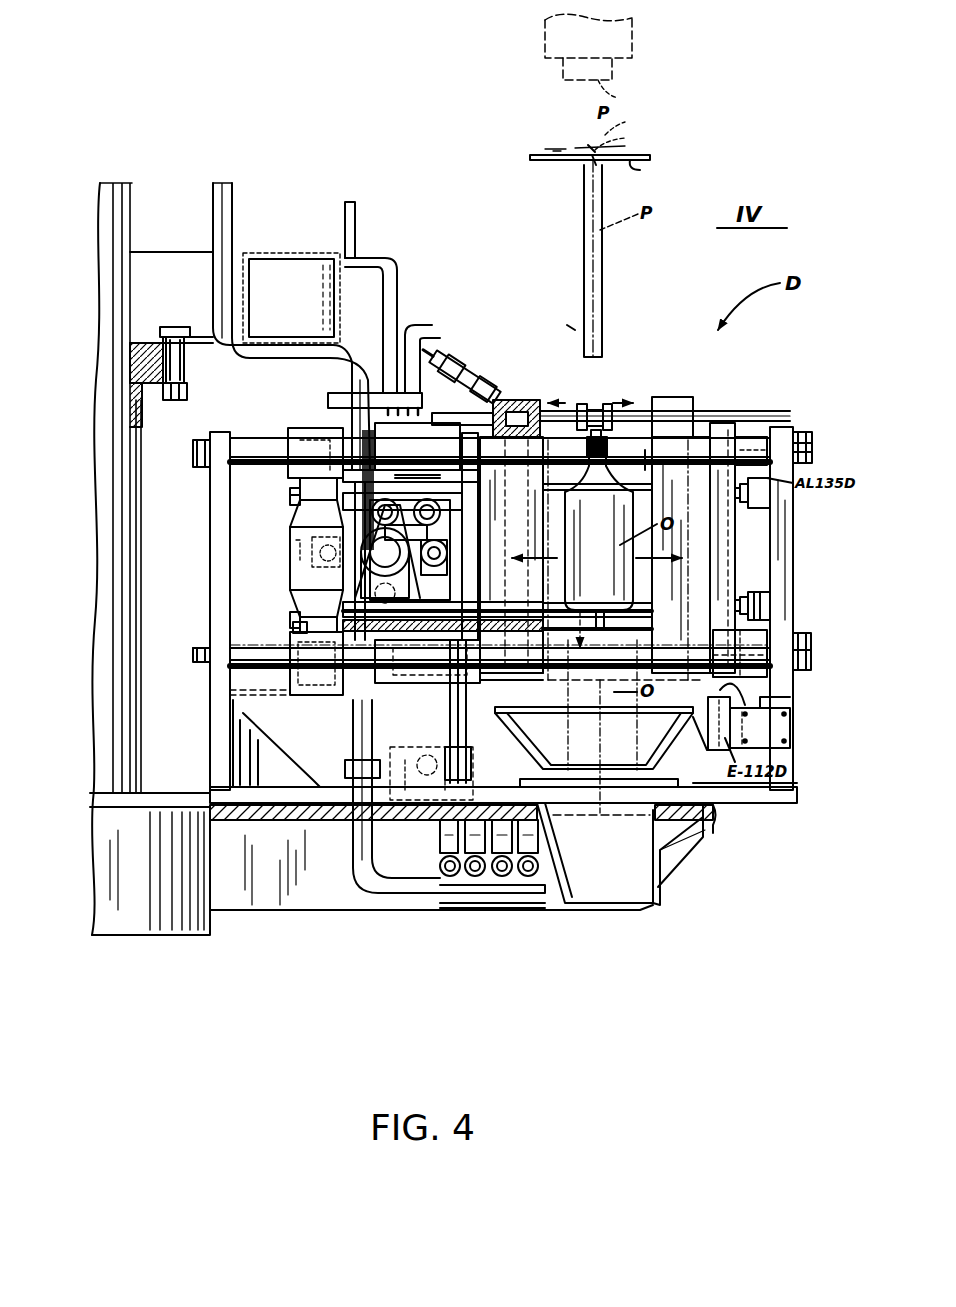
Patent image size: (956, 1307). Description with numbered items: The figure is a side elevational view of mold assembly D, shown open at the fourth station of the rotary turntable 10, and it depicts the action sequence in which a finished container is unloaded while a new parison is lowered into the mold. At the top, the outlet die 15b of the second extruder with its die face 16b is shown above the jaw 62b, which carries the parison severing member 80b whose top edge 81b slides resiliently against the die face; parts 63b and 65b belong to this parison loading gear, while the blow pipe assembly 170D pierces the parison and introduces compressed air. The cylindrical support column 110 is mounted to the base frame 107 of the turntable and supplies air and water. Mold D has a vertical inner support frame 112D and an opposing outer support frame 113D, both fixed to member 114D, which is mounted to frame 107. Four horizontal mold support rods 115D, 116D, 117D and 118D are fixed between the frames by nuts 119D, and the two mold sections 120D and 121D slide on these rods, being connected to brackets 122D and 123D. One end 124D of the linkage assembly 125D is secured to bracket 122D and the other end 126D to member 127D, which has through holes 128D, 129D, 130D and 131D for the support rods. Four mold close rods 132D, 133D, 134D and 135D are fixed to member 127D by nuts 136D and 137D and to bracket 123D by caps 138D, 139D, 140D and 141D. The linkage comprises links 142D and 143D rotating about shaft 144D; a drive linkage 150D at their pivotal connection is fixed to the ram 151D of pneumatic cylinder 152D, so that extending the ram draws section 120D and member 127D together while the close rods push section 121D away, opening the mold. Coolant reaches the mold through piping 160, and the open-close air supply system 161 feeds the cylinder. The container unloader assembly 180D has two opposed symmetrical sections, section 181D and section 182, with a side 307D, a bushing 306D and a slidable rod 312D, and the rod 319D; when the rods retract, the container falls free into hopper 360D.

The cylindrical support column 110 is at (100, 199).
The mold open-close air supply system 161 is at (376, 303).
The unloader section 182 is at (490, 406).
The blow pipe assembly 170D is at (488, 372).
The bracket 122D is at (515, 403).
The rod 319D is at (665, 405).
The unloader section 181D is at (636, 397).
The inner support frame 112D is at (220, 443).
The outer support frame 113D is at (784, 597).
The nuts 119D is at (803, 433).
The other end of linkage assembly 126D is at (216, 578).
The nut 136D is at (292, 703).
The nut 137D is at (358, 524).
The through hole 128D is at (290, 503).
The through hole 129D is at (264, 562).
The linkage assembly 125D is at (314, 548).
The member 127D is at (294, 607).
The mold close rod 132D is at (411, 531).
The mold close rod 133D is at (439, 452).
The linkage 143D is at (378, 497).
The one end of linkage assembly 124D is at (445, 545).
The shaft 144D is at (383, 553).
The linkage 142D is at (360, 588).
The drive linkage assembly 150D is at (428, 498).
The ram 151D is at (457, 630).
The mold section 120D is at (532, 668).
The bracket 123D is at (705, 437).
The side 307D is at (663, 397).
The rod 312D is at (720, 446).
The bushing 306D is at (745, 428).
The cap 138D is at (765, 497).
The cap 139D is at (808, 576).
The cap 140D is at (748, 614).
The cap 141D is at (811, 624).
The mold section 121D is at (700, 662).
The member 114D is at (737, 795).
The rotary turntable 10 is at (700, 862).
The base frame 107 is at (706, 826).
The piping 160 is at (470, 876).
The pneumatic cylinder 152D is at (467, 735).
The hopper 360D is at (545, 752).
The mold close rod 134D is at (250, 717).
The mold close rod 135D is at (314, 751).
The mold support rod 117D is at (240, 660).
The mold support rod 118D is at (175, 665).
The through hole 130D is at (287, 677).
The through hole 131D is at (216, 703).
The mold support rod 115D is at (320, 397).
The mold support rod 116D is at (263, 387).
The outlet die 15b is at (548, 50).
The die face 16b is at (620, 97).
The top edge of parison severing member 81b is at (627, 122).
The parison severing member 80b is at (627, 138).
The pivot 65b is at (592, 152).
The jaw 62b is at (561, 162).
The plate 63b is at (642, 170).
The container unloader assembly 180D is at (565, 328).